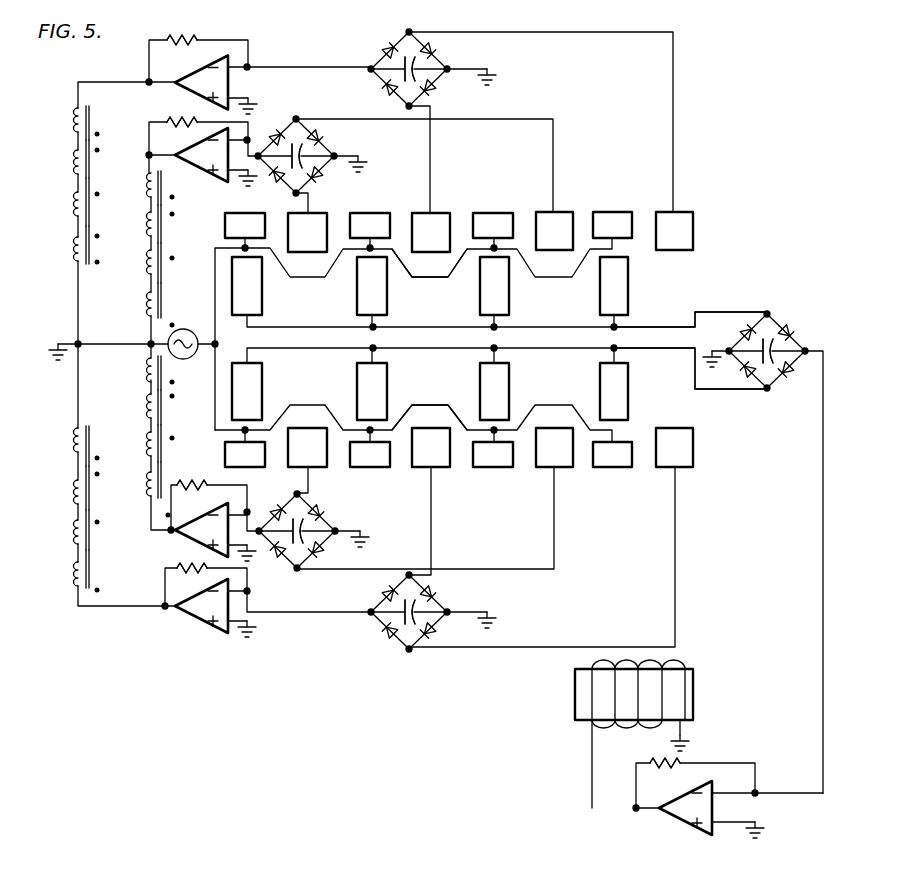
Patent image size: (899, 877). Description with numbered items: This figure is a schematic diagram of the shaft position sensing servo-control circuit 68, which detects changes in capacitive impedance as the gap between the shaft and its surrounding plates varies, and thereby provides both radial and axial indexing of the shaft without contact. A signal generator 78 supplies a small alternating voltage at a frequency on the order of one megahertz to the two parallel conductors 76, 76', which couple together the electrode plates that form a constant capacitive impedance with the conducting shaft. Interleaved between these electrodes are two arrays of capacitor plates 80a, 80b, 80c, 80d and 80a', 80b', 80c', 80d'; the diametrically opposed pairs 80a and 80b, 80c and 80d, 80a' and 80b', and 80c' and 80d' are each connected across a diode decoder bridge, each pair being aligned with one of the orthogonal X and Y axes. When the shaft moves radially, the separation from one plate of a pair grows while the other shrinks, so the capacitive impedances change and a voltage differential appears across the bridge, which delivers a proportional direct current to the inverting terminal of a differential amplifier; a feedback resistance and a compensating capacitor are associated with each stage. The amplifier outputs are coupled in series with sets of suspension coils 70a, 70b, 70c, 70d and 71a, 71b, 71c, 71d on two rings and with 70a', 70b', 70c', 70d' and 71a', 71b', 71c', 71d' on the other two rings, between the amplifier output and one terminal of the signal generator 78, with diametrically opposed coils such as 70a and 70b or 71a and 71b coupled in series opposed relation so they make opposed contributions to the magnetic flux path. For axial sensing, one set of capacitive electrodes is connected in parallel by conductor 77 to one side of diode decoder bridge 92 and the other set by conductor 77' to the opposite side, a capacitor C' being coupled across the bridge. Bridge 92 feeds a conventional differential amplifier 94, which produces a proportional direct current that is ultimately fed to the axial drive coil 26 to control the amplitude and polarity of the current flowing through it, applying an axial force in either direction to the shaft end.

The axial drive coil 26 is at (693, 686).
The shaft position sensing servo-control circuit 68 is at (750, 156).
The suspension coil 70a is at (56, 112).
The suspension coil 70b is at (56, 195).
The suspension coil 70c is at (132, 175).
The suspension coil 70d is at (130, 254).
The suspension coil 71a is at (58, 152).
The suspension coil 71b is at (58, 239).
The suspension coil 71c is at (127, 215).
The suspension coil 71d is at (132, 301).
The suspension coil 70a' is at (57, 589).
The suspension coil 70b' is at (58, 496).
The suspension coil 70c' is at (125, 487).
The suspension coil 70d' is at (125, 395).
The suspension coil 71a' is at (59, 540).
The suspension coil 71b' is at (58, 451).
The suspension coil 71c' is at (123, 442).
The suspension coil 71d' is at (125, 365).
The parallel conductor 76 is at (429, 280).
The parallel conductor 76' is at (429, 402).
The conductor 77 is at (690, 314).
The conductor 77' is at (690, 368).
The signal generator 78 is at (196, 331).
The capacitor plate 80a is at (450, 215).
The capacitor plate 80b is at (695, 214).
The capacitor plate 80c is at (572, 214).
The capacitor plate 80d is at (328, 215).
The capacitor plate 80a' is at (445, 470).
The capacitor plate 80b' is at (695, 470).
The capacitor plate 80c' is at (569, 470).
The capacitor plate 80d' is at (331, 470).
The diode decoder bridge 92 is at (788, 334).
The differential amplifier 94 is at (678, 820).
The capacitor C' is at (788, 368).